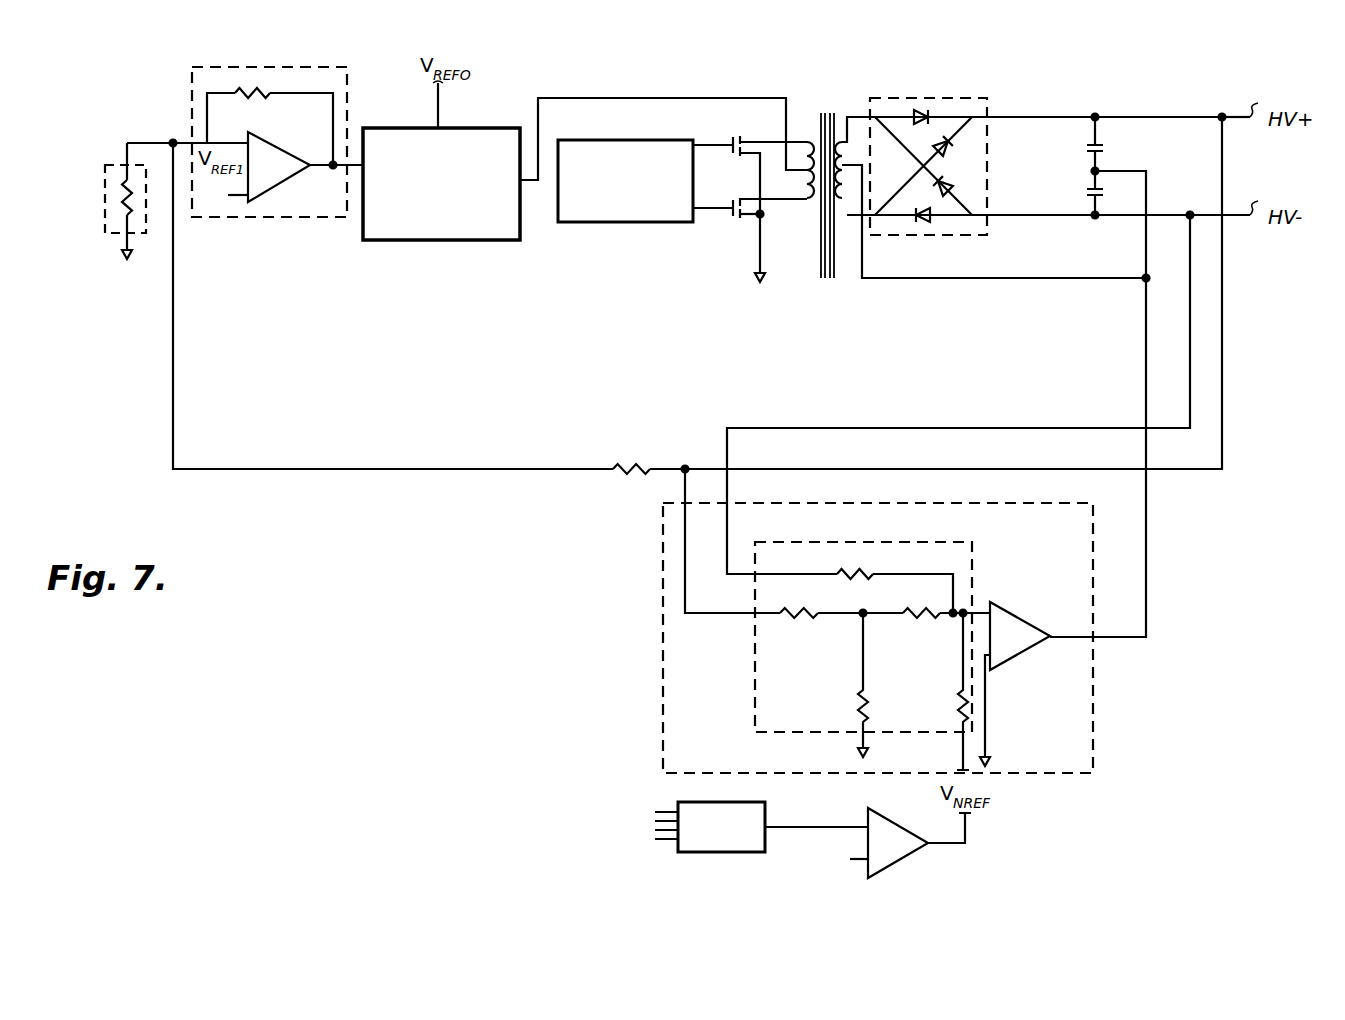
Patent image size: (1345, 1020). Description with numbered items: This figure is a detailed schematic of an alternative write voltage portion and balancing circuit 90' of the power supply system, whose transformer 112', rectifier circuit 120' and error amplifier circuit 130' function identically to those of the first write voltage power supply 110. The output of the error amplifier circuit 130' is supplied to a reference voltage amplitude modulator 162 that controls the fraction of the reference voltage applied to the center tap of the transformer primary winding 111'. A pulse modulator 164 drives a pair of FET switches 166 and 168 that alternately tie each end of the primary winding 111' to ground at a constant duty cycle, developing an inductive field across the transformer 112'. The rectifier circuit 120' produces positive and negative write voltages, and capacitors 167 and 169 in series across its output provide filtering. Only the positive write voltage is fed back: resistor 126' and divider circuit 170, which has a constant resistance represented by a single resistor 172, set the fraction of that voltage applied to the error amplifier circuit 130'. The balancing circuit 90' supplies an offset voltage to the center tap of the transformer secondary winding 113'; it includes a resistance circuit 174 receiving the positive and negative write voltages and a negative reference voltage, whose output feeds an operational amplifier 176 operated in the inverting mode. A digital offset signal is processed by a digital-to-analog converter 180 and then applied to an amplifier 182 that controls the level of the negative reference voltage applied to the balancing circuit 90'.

The error amplifier circuit 130' is at (296, 124).
The divider circuit 170 is at (105, 165).
The resistor 172 is at (125, 202).
The reference voltage amplitude modulator 162 is at (418, 240).
The pulse modulator 164 is at (603, 222).
The FET switch 166 is at (733, 133).
The FET switch 168 is at (737, 219).
The transformer primary winding 111' is at (797, 207).
The transformer 112' is at (862, 165).
The transformer secondary winding 113' is at (894, 132).
The rectifier circuit 120' is at (963, 146).
The first write voltage power supply 110 is at (1080, 66).
The capacitor 167 is at (1112, 147).
The capacitor 169 is at (1112, 193).
The resistor 126' is at (617, 499).
The resistance circuit 174 is at (972, 560).
The operational amplifier 176 is at (1022, 616).
The balancing circuit 90' is at (905, 638).
The digital-to-analog converter 180 is at (718, 852).
The amplifier 182 is at (900, 860).